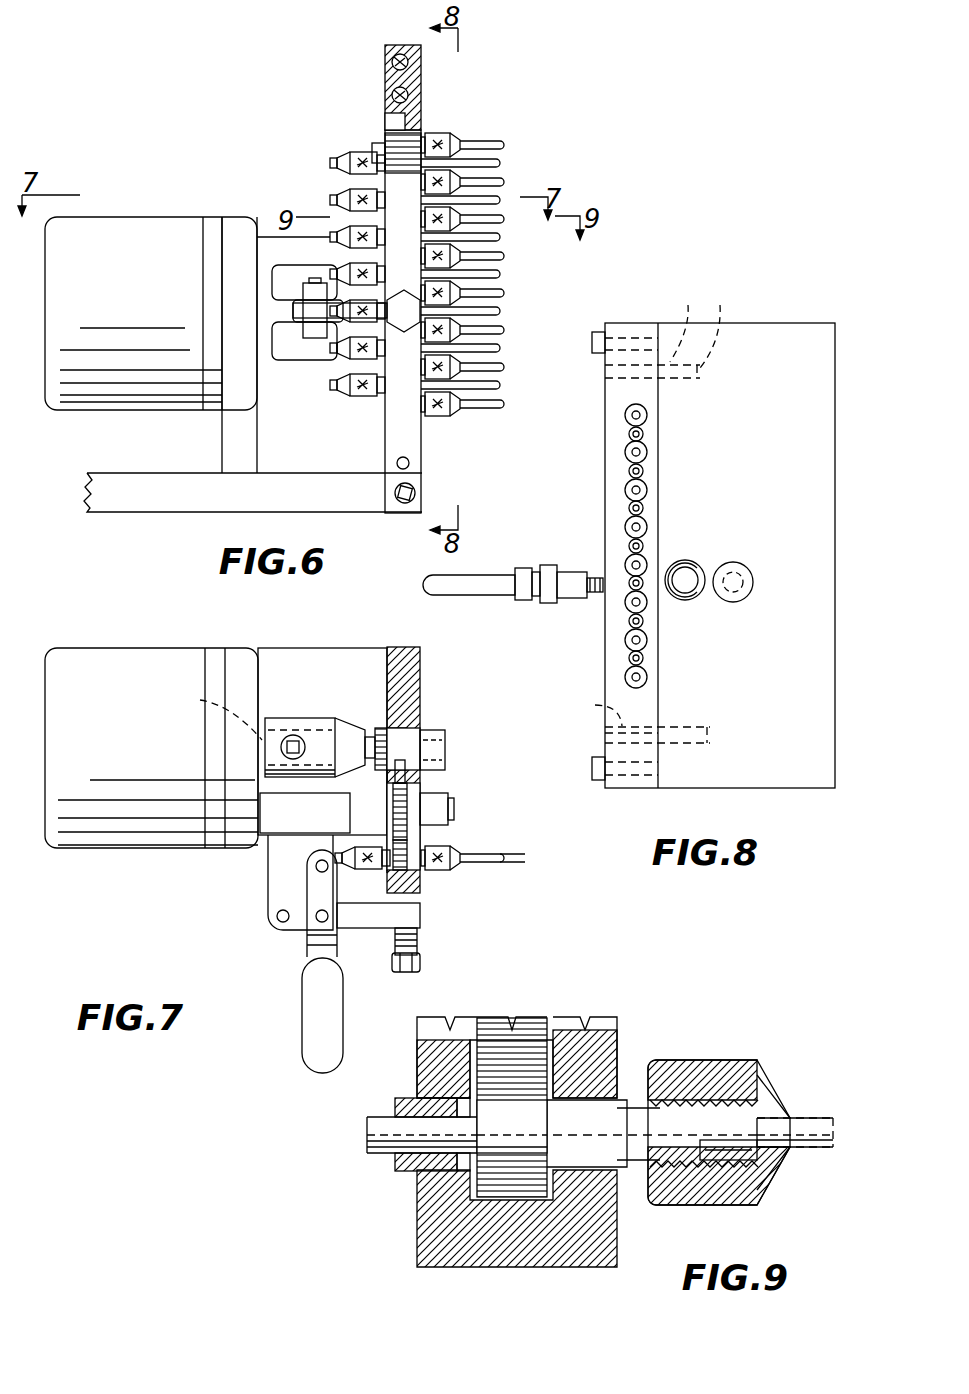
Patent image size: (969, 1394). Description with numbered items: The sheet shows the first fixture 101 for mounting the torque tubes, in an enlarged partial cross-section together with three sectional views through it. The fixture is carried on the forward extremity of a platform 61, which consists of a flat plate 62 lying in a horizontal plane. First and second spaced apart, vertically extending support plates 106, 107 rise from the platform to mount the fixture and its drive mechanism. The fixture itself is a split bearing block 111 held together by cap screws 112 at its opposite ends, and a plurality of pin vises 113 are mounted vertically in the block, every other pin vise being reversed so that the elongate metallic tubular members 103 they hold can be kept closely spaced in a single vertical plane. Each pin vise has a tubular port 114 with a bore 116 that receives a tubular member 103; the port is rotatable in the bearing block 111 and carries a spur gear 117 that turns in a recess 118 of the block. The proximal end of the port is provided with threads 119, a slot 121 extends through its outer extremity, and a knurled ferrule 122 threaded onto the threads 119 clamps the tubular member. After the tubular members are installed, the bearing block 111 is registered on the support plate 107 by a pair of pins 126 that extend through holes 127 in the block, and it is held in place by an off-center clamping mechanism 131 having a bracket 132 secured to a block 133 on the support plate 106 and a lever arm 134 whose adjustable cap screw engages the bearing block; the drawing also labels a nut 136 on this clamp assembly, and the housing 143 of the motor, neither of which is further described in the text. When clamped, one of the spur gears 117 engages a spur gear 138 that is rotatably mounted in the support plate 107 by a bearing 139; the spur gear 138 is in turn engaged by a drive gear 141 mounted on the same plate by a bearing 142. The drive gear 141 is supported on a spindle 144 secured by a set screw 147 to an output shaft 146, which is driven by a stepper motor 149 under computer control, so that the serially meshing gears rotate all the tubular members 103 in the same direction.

In FIG. 6, the platform 61 is at (160, 468).
In FIG. 6, the flat plate 62 is at (137, 505).
In FIG. 6, the first fixture 101 is at (362, 93).
In FIG. 6, the tubular members 103 is at (505, 164).
In FIG. 8, the tubular members 103 is at (628, 470).
In FIG. 7, the tubular members 103 is at (512, 866).
In FIG. 9, the tubular members 103 is at (406, 1158).
In FIG. 6, the first support plate 106 is at (240, 228).
In FIG. 7, the first support plate 106 is at (240, 665).
In FIG. 8, the second support plate 107 is at (606, 743).
In FIG. 6, the split bearing block 111 is at (405, 438).
In FIG. 7, the split bearing block 111 is at (418, 884).
In FIG. 9, the split bearing block 111 is at (618, 1058).
In FIG. 6, the cap screws 112 is at (383, 55).
In FIG. 8, the cap screws 112 is at (596, 332).
In FIG. 6, the pin vises 113 is at (445, 132).
In FIG. 8, the pin vises 113 is at (626, 450).
In FIG. 7, the pin vises 113 is at (452, 872).
In FIG. 9, the pin vises 113 is at (745, 1197).
In FIG. 9, the tubular port 114 is at (418, 1175).
In FIG. 9, the bore 116 is at (410, 1110).
In FIG. 9, the spur gear 117 is at (450, 1232).
In FIG. 9, the recess 118 is at (565, 1200).
In FIG. 7, the threads 119 is at (440, 850).
In FIG. 9, the threads 119 is at (705, 1098).
In FIG. 9, the slot 121 is at (740, 1130).
In FIG. 9, the knurled ferrule 122 is at (737, 1062).
In FIG. 6, the pins 126 is at (420, 112).
In FIG. 8, the pins 126 is at (619, 502).
In FIG. 8, the holes 127 is at (722, 323).
In FIG. 7, the off-center clamping mechanism 131 is at (290, 953).
In FIG. 6, the bracket 132 is at (287, 265).
In FIG. 7, the bracket 132 is at (270, 875).
In FIG. 7, the block 133 is at (285, 831).
In FIG. 6, the lever arm 134 is at (318, 322).
In FIG. 7, the lever arm 134 is at (312, 1032).
In FIG. 6, the nut 136 is at (356, 334).
In FIG. 7, the nut 136 is at (420, 960).
In FIG. 7, the spur gear 138 is at (420, 795).
In FIG. 8, the bearing 139 is at (690, 560).
In FIG. 7, the bearing 139 is at (452, 805).
In FIG. 7, the drive gear 141 is at (410, 725).
In FIG. 8, the bearing 142 is at (731, 562).
In FIG. 7, the bearing 142 is at (446, 740).
In FIG. 7, the motor 143 is at (95, 758).
In FIG. 7, the spindle 144 is at (292, 718).
In FIG. 7, the shaft 146 is at (208, 707).
In FIG. 7, the set screw 147 is at (300, 740).
In FIG. 6, the stepper motor 149 is at (108, 308).